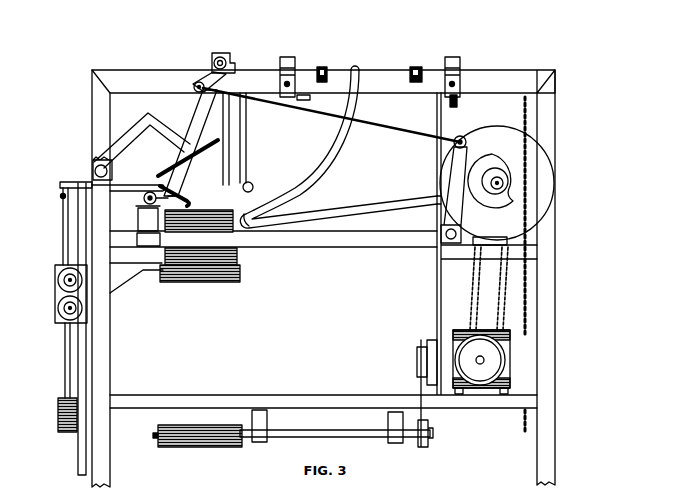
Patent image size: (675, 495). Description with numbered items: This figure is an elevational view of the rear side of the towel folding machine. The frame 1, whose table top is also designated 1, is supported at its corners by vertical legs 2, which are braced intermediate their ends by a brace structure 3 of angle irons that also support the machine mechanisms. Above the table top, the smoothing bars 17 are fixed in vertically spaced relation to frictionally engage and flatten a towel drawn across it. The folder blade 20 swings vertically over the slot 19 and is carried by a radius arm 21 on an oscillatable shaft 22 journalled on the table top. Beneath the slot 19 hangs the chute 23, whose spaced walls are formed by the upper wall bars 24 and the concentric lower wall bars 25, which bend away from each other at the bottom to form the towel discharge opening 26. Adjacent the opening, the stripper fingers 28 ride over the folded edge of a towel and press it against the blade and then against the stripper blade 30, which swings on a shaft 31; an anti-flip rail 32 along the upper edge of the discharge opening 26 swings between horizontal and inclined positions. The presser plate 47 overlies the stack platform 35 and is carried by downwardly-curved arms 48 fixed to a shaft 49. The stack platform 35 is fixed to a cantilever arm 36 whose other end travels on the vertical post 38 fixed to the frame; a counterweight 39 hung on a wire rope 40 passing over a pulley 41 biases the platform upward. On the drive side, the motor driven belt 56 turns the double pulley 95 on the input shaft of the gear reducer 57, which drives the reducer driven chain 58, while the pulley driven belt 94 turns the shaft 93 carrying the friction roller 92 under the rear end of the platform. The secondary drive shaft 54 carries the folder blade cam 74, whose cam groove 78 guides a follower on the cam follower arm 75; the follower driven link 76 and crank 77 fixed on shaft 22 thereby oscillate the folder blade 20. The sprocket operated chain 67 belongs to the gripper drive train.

The frame 1 is at (500, 80).
The vertical legs 2 is at (106, 342).
The brace structure 3 is at (480, 408).
The smoothing bars 17 is at (322, 67).
The slot 19 is at (352, 70).
The folder blade 20 is at (189, 195).
The radius arm 21 is at (193, 120).
The oscillatable shaft 22 is at (226, 58).
The chute 23 is at (421, 192).
The upper wall bars 24 is at (288, 165).
The lower wall bars 25 is at (348, 162).
The towel discharge opening 26 is at (262, 208).
The stripper fingers 28 is at (134, 184).
The stripper blade 30 is at (140, 217).
The shaft 31 is at (143, 199).
The anti-flip rail 32 is at (190, 201).
The stack platform 35 is at (203, 283).
The cantilever arm 36 is at (120, 288).
The vertical post 38 is at (80, 445).
The counterweight 39 is at (58, 408).
The wire rope 40 is at (56, 336).
The pulley 41 is at (62, 195).
The presser plate 47 is at (190, 158).
The downwardly-curved arms 48 is at (133, 136).
The shaft 49 is at (92, 165).
The secondary drive shaft 54 is at (503, 184).
The motor driven belt 56 is at (432, 340).
The gear reducer 57 is at (481, 362).
The reducer driven chain 58 is at (476, 278).
The sprocket operated chain 67 is at (530, 316).
The folder blade cam 74 is at (516, 220).
The cam follower arm 75 is at (452, 176).
The follower driven link 76 is at (396, 133).
The crank 77 is at (203, 72).
The cam groove 78 is at (490, 165).
The friction roller 92 is at (190, 447).
The shaft 93 is at (325, 431).
The pulley driven belt 94 is at (420, 386).
The double pulley 95 is at (417, 349).